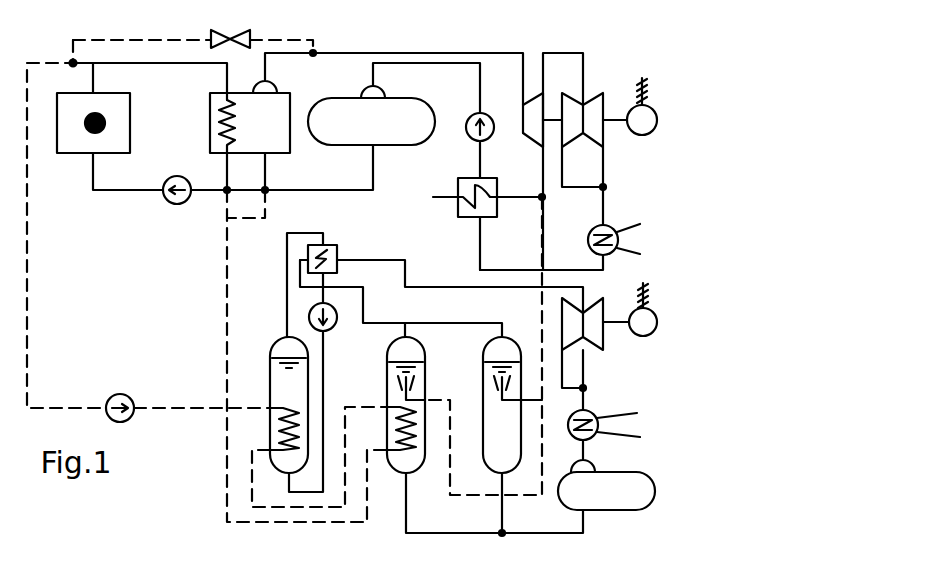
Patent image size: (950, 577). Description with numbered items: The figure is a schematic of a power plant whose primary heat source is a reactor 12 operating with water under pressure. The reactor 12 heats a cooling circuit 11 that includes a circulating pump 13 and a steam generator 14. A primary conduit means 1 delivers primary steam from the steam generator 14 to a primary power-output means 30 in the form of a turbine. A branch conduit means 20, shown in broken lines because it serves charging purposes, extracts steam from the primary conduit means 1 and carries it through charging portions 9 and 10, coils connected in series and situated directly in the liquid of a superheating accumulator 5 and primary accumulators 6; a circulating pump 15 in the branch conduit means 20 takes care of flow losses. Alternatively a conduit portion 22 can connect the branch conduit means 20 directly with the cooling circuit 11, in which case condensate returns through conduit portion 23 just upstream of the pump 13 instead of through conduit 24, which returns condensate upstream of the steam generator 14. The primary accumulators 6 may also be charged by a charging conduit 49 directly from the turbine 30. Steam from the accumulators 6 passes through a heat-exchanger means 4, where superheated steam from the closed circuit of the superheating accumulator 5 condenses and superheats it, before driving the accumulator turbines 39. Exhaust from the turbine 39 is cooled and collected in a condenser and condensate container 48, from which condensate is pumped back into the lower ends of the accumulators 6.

The primary conduit means 1 is at (447, 35).
The heat-exchanger means 4 is at (327, 250).
The superheating accumulator 5 is at (275, 373).
The primary accumulators 6 is at (490, 423).
The charging portion 9 is at (280, 433).
The charging portion 10 is at (400, 448).
The cooling circuit 11 is at (168, 67).
The reactor 12 is at (102, 145).
The circulating pump 13 is at (164, 184).
The steam generator 14 is at (215, 145).
The circulating pump 15 is at (112, 372).
The branch conduit means 20 is at (105, 20).
The conduit portion 22 is at (73, 76).
The conduit portion 23 is at (225, 212).
The conduit 24 is at (265, 205).
The primary power-output means 30 is at (537, 120).
The accumulator turbines 39 is at (570, 330).
The condenser and condensate container 48 is at (633, 485).
The charging conduit 49 is at (543, 415).